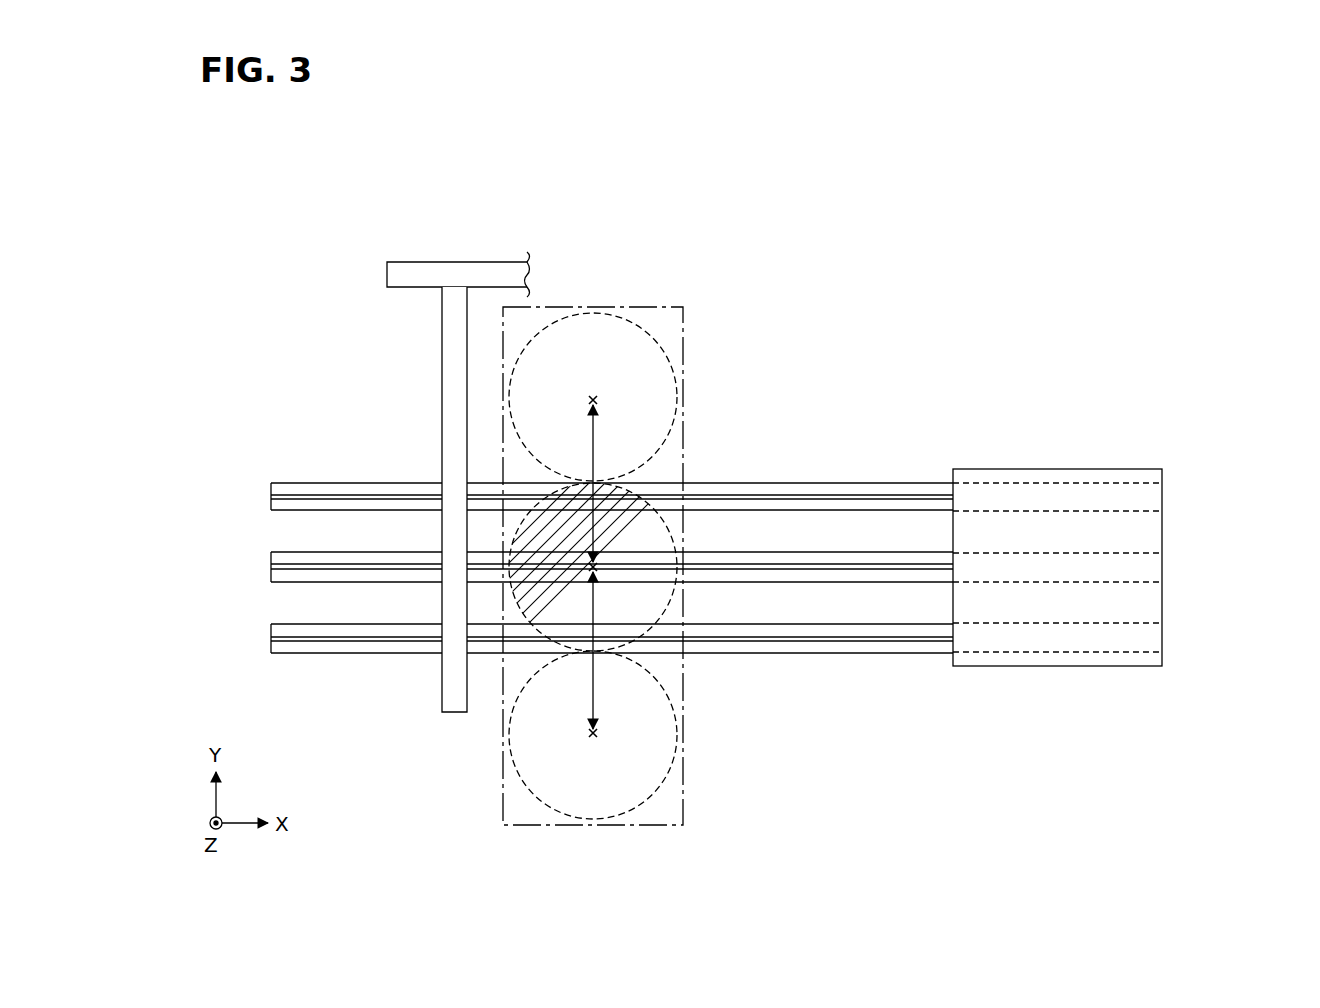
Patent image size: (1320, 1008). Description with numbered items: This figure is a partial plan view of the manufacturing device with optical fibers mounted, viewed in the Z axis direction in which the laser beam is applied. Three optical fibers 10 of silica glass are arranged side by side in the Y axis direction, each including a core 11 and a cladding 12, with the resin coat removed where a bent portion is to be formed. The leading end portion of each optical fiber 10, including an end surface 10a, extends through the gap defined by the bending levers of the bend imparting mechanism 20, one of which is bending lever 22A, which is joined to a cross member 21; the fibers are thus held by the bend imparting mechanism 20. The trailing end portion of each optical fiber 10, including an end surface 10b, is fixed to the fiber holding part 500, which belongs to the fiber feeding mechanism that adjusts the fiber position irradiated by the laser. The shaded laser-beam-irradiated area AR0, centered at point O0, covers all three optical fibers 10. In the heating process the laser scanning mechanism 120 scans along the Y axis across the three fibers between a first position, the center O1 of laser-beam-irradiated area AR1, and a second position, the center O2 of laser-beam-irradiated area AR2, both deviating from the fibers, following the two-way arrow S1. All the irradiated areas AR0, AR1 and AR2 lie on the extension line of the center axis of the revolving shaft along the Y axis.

The optical fiber 10 is at (580, 567).
The end surface 10a is at (271, 497).
The end surface 10b is at (1163, 495).
The core 11 is at (353, 495).
The cladding 12 is at (405, 490).
The bend imparting mechanism 20 is at (407, 482).
The head bar 21 is at (387, 275).
The bending lever 22A is at (442, 313).
The laser scanning mechanism 120 is at (668, 306).
The fiber holding part 500 is at (1093, 541).
The laser-beam-irradiated area AR0 is at (683, 526).
The laser-beam-irradiated area AR1 is at (668, 775).
The laser-beam-irradiated area AR2 is at (665, 356).
The center point of central area O0 is at (598, 569).
The center of laser-beam-irradiated area AR1 O1 is at (598, 734).
The center of laser-beam-irradiated area AR2 O2 is at (598, 400).
The two-way arrow S1 is at (595, 695).